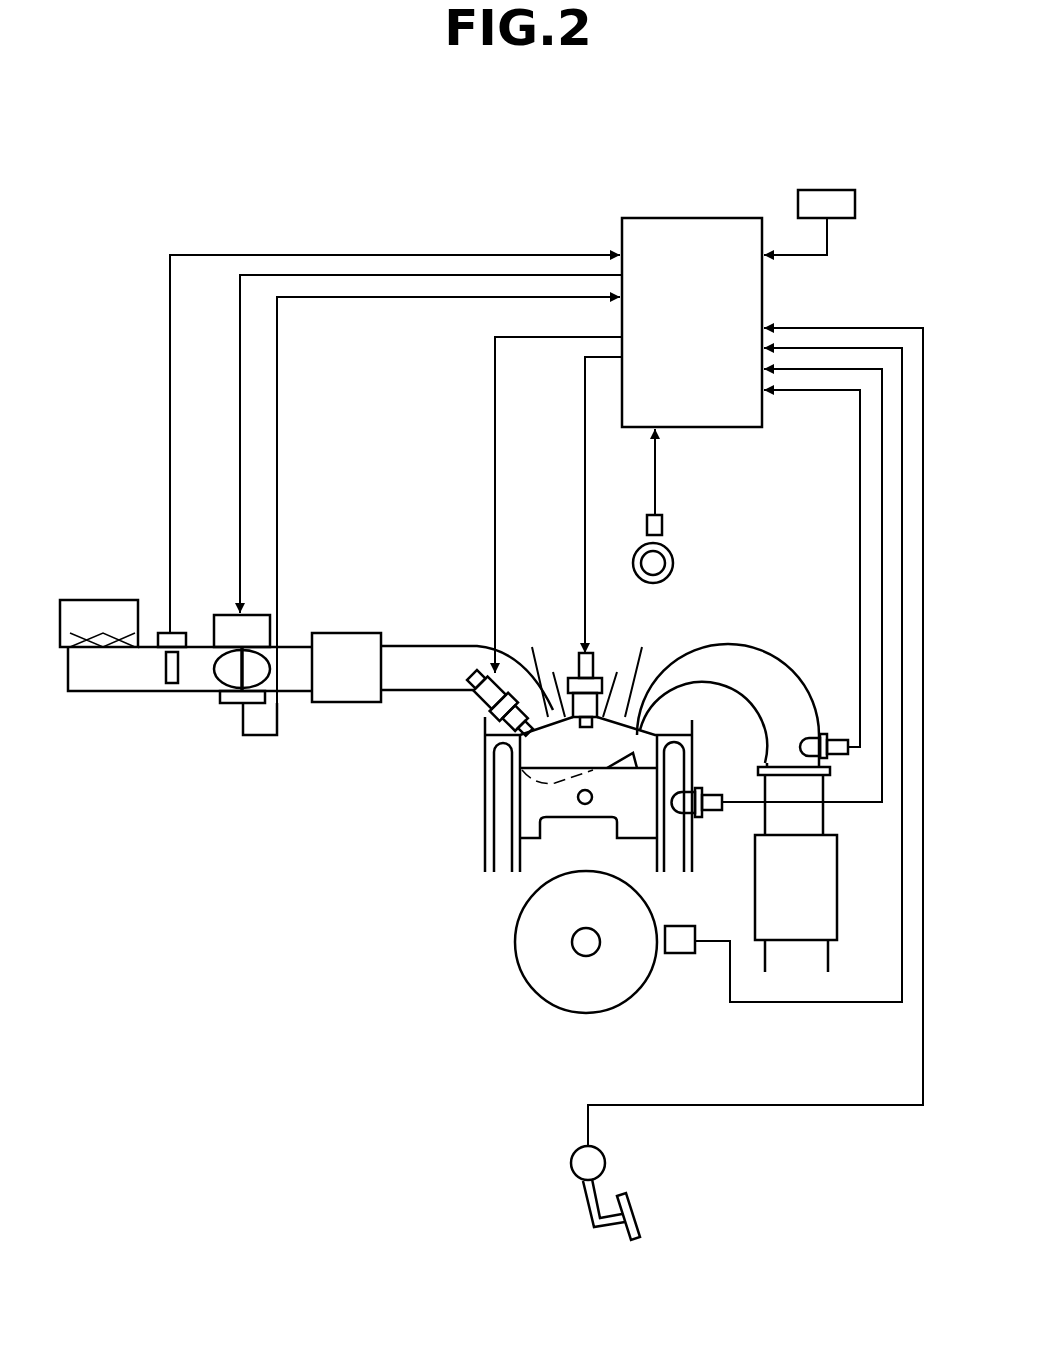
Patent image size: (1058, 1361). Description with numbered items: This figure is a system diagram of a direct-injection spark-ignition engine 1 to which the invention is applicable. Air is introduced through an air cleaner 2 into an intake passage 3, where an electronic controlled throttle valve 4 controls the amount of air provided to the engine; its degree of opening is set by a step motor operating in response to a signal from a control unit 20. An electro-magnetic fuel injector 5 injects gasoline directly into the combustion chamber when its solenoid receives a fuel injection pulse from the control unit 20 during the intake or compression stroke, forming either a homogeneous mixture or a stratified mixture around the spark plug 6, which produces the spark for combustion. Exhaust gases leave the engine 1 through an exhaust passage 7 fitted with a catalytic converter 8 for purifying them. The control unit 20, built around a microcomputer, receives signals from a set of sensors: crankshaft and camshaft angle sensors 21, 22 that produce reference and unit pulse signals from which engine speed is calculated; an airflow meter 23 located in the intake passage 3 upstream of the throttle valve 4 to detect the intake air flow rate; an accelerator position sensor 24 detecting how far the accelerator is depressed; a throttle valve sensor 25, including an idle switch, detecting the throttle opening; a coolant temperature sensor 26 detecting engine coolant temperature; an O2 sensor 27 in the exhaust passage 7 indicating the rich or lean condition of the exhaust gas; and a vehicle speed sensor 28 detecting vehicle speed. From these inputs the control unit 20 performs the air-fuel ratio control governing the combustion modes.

The direct-injection spark-ignition engine 1 is at (470, 836).
The air cleaner 2 is at (93, 600).
The intake passage 3 is at (122, 682).
The electronic controlled throttle valve 4 is at (222, 615).
The electro-magnetic fuel injector 5 is at (481, 695).
The spark plug 6 is at (574, 666).
The exhaust passage 7 is at (742, 655).
The catalytic converter 8 is at (838, 897).
The control unit 20 is at (688, 217).
The crankshaft angle sensor 21 is at (680, 955).
The camshaft angle sensor 22 is at (665, 524).
The airflow meter 23 is at (170, 685).
The accelerator position sensor 24 is at (571, 1161).
The throttle valve sensor 25 is at (224, 705).
The coolant temperature sensor 26 is at (711, 823).
The O2 sensor 27 is at (843, 733).
The vehicle speed sensor 28 is at (827, 190).